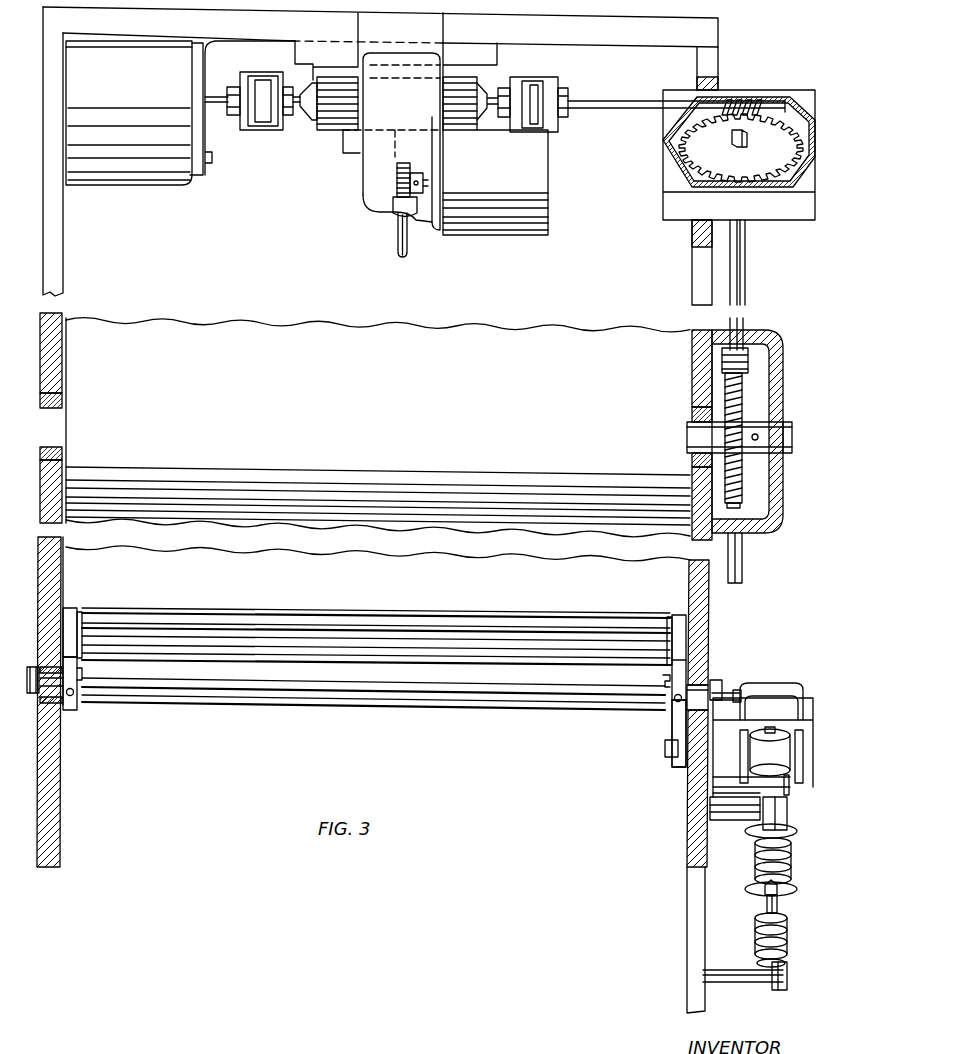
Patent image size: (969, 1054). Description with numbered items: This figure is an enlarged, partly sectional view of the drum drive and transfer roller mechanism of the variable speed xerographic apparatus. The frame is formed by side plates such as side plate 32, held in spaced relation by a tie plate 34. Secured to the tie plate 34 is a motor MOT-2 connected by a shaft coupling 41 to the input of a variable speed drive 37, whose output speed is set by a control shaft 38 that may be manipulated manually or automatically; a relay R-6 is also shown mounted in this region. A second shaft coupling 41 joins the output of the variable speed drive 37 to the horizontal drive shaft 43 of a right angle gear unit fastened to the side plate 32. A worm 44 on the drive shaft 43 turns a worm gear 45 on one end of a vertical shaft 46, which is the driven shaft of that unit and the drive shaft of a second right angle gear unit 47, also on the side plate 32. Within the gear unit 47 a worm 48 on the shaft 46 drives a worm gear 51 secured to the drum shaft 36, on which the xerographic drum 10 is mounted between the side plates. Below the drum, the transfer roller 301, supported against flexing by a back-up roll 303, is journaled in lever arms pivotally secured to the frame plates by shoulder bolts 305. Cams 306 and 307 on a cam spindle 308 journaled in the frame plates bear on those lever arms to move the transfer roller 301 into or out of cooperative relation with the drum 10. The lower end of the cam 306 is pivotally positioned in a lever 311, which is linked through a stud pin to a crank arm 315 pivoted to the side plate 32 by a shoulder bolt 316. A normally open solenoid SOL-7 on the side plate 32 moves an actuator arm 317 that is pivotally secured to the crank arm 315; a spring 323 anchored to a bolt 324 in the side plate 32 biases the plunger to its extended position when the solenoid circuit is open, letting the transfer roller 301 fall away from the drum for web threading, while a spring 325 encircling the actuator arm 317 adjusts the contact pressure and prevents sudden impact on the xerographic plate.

The tie plate 34 is at (650, 3).
The side plate 32 is at (718, 58).
The motor MOT-2 is at (147, 177).
The shaft coupling 41 is at (264, 122).
The variable speed drive 37 is at (324, 122).
The drive shaft 43 is at (598, 110).
The relay R-6 is at (548, 172).
The control shaft 38 is at (405, 250).
The worm 44 is at (748, 101).
The worm gear 45 is at (750, 176).
The shaft 46 is at (738, 147).
The drum 10 is at (427, 518).
The worm 48 is at (750, 378).
The drum shaft 36 is at (785, 430).
The worm gear 51 is at (752, 490).
The right angle gear unit 47 is at (770, 516).
The transfer roller 301 is at (500, 612).
The back-up roll 303 is at (461, 662).
The shoulder bolt 305 is at (663, 680).
The cam 306 is at (668, 709).
The cam 307 is at (77, 702).
The cam spindle 308 is at (346, 690).
The lever 311 is at (680, 770).
The solenoid SOL-7 is at (774, 690).
The crank arm 315 is at (728, 815).
The shoulder bolt 316 is at (788, 790).
The actuator arm 317 is at (783, 815).
The spring 325 is at (755, 862).
The spring 323 is at (756, 942).
The bolt 324 is at (781, 990).